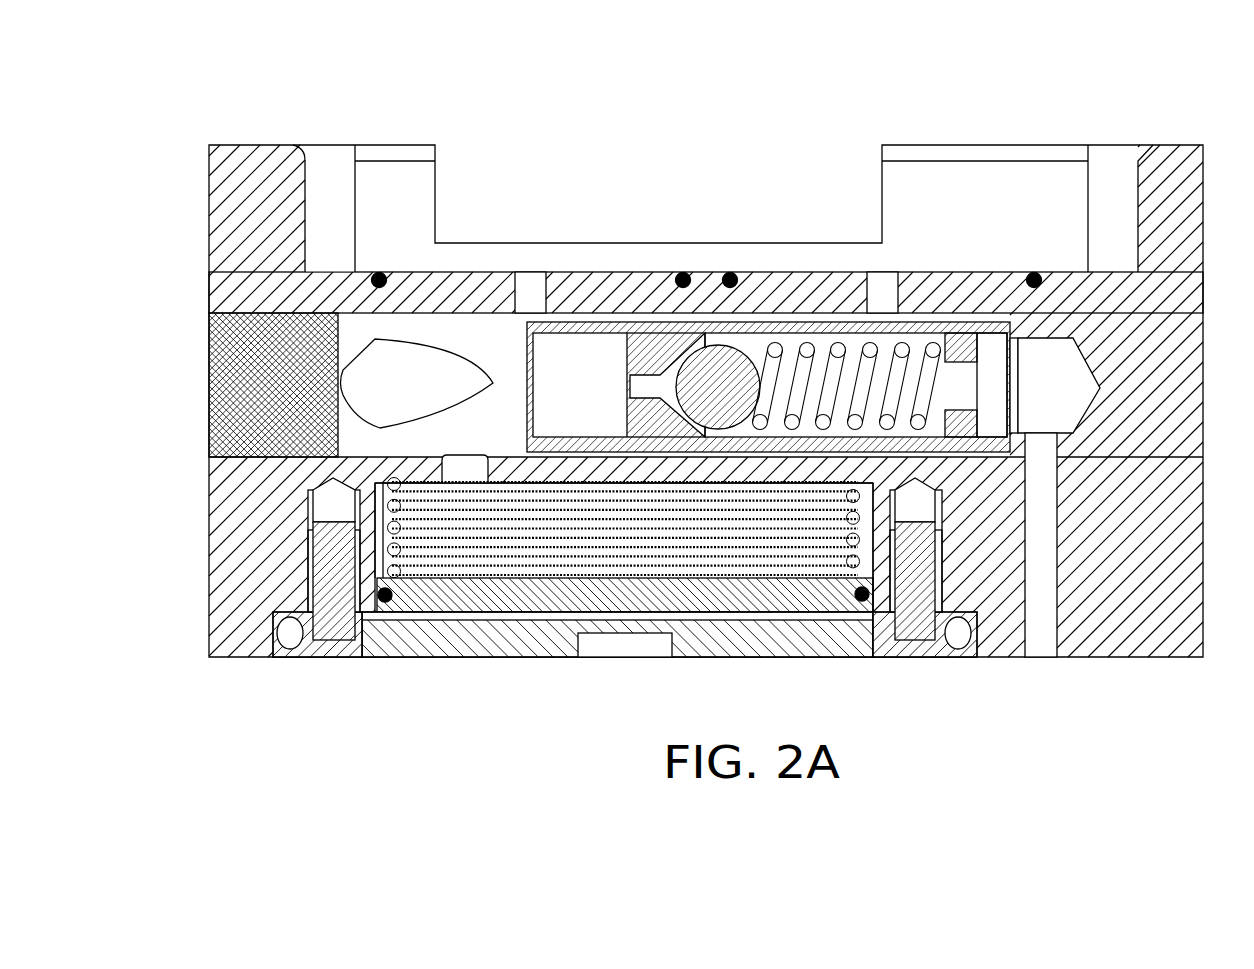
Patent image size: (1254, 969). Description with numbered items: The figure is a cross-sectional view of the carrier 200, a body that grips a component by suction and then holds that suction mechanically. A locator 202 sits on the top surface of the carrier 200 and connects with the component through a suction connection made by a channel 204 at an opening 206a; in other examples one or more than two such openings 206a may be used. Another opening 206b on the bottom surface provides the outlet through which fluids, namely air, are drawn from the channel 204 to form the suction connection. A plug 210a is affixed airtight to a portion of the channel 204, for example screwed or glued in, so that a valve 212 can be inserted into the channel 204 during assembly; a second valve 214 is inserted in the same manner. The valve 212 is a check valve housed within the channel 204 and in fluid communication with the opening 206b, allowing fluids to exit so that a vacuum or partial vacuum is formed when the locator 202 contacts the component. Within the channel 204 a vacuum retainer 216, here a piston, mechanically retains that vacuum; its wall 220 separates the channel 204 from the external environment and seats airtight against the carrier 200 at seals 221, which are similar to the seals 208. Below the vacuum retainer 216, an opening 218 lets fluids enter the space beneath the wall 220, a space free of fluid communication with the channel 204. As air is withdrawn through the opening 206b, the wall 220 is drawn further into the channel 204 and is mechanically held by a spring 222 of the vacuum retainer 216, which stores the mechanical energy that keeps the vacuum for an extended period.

The carrier 200 is at (121, 112).
The locator 202 is at (323, 133).
The channel 204 is at (340, 305).
The opening 206a is at (532, 272).
The opening 206b is at (1046, 657).
The seals 208 is at (684, 271).
The plug 210a is at (210, 402).
The valve 212 is at (1022, 325).
The valve 214 is at (365, 436).
The vacuum retainer 216 is at (700, 625).
The opening 218 is at (601, 657).
The wall 220 is at (525, 618).
The seals 221 is at (858, 600).
The spring 222 is at (436, 558).